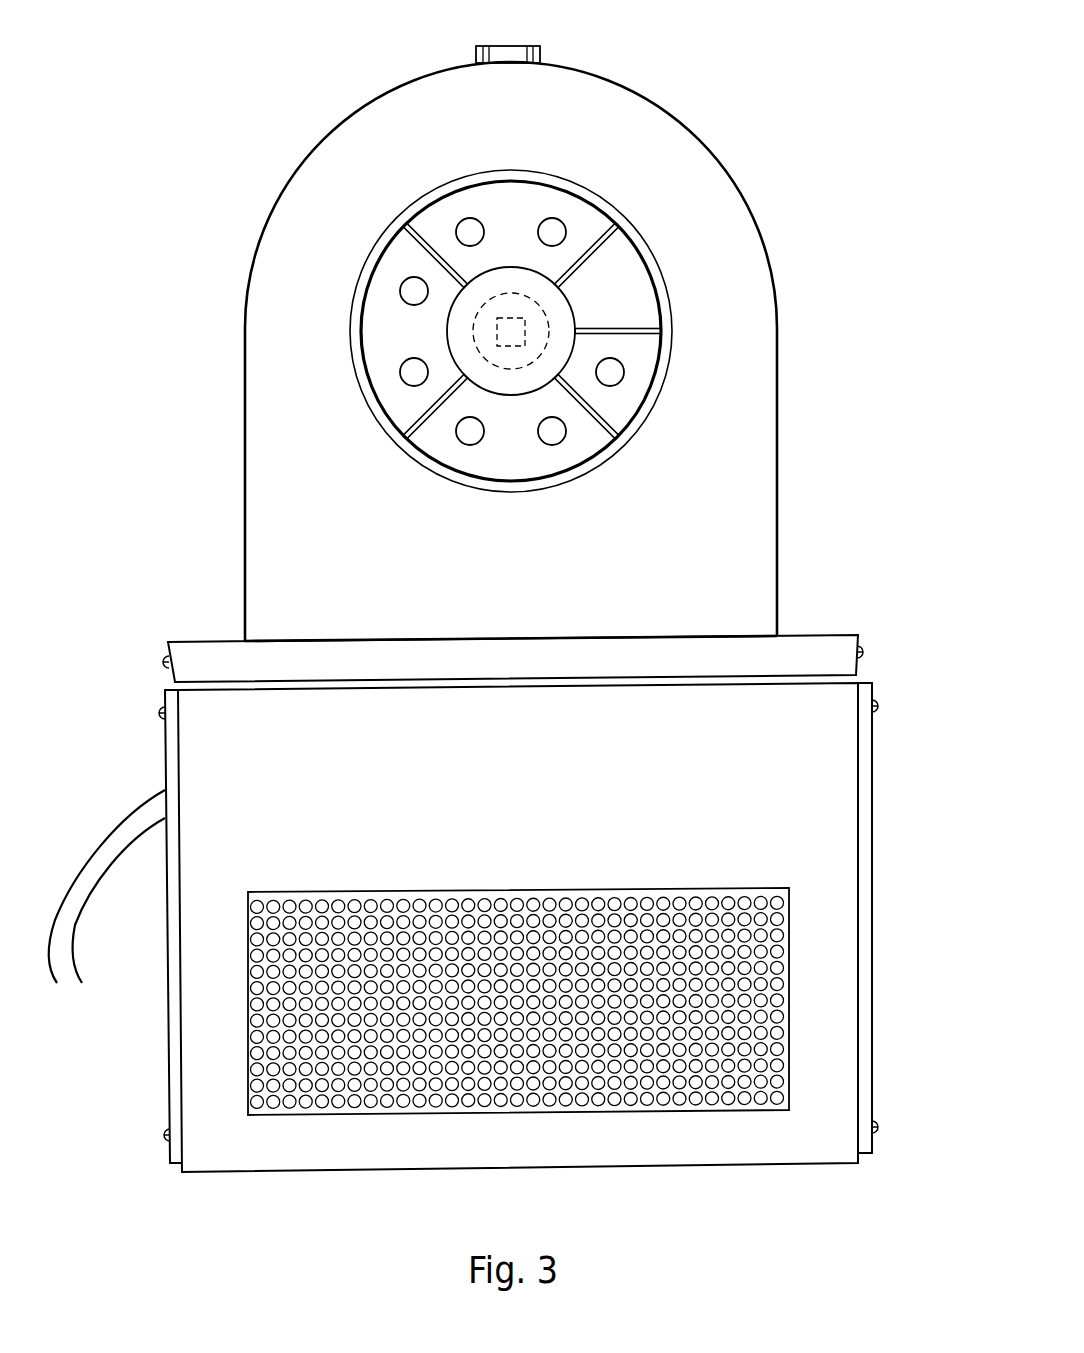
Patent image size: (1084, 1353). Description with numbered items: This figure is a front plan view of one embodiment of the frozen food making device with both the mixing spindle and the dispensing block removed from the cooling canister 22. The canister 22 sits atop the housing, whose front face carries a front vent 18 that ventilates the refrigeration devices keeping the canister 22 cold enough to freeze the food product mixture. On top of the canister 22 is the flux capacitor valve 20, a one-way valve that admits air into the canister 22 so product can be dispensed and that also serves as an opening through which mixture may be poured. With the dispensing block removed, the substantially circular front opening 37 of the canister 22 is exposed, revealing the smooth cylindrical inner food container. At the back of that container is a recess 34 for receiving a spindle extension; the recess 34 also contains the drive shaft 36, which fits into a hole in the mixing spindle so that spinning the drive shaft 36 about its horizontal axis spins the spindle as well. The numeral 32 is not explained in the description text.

The front vent 18 is at (758, 928).
The flux capacitor valve 20 is at (513, 46).
The cooling canister 22 is at (312, 177).
The disk assembly 32 is at (502, 274).
The recess 34 is at (480, 333).
The drive shaft 36 is at (511, 318).
The front opening 37 is at (373, 412).